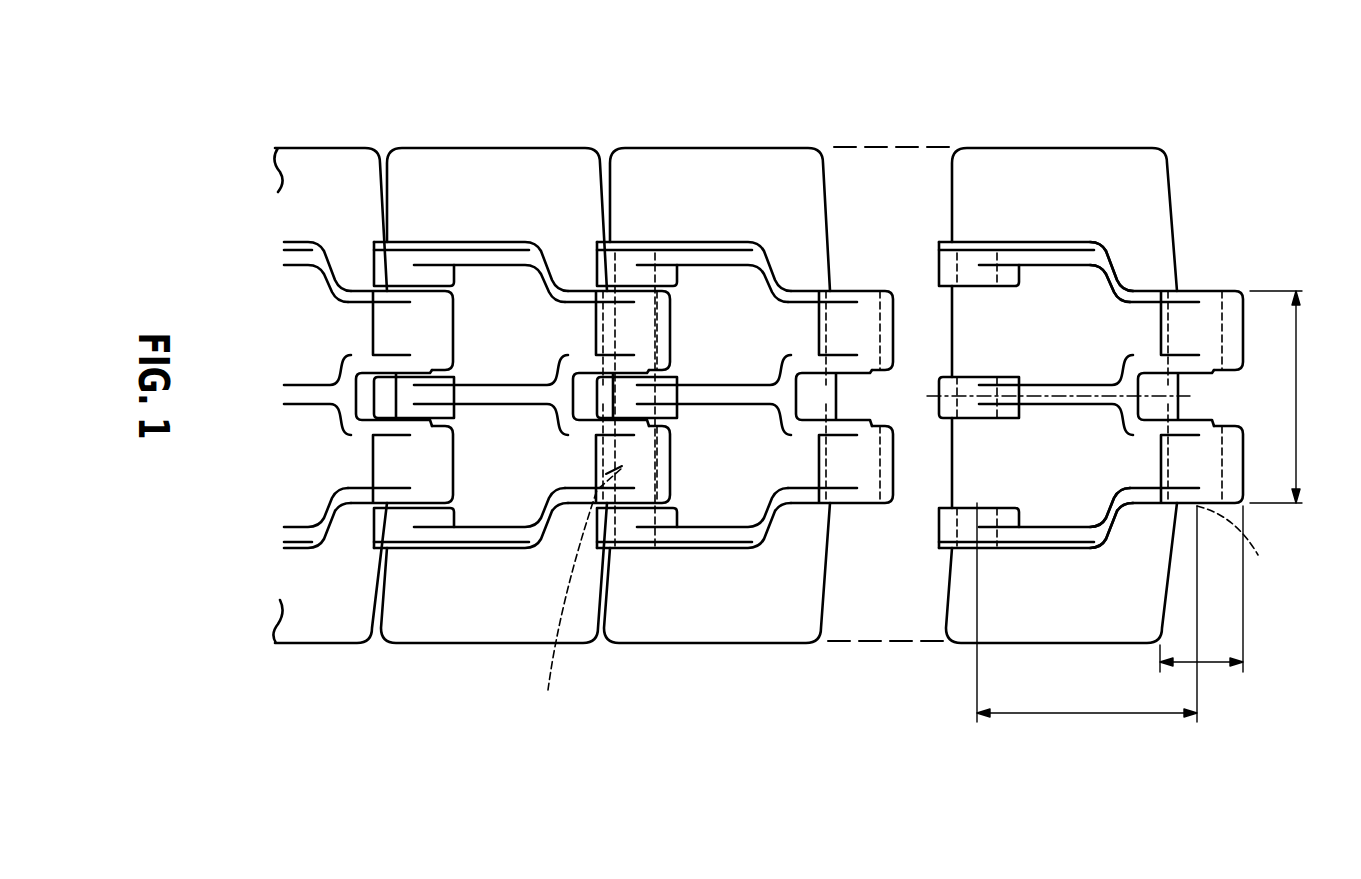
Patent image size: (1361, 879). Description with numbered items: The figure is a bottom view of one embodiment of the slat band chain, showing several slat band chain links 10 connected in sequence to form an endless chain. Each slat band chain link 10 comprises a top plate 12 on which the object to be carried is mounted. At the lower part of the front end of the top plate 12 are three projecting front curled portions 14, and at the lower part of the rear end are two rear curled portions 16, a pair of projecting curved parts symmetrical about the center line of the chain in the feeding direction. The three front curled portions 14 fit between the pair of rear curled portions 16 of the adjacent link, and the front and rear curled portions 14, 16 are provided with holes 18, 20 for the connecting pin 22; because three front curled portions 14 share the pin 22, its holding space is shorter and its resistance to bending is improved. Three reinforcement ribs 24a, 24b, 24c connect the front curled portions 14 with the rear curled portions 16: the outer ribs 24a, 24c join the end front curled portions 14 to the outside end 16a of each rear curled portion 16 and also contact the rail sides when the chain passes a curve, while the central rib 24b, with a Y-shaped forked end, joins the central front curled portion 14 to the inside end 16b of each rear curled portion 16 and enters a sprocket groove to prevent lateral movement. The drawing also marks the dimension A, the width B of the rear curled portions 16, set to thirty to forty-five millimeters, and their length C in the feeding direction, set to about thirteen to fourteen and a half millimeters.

The slat band chain link 10 is at (803, 132).
The top plate 12 is at (327, 157).
The front curled portions 14 is at (940, 265).
The rear curled portions 16 is at (1233, 292).
The outside end of rear curled portion 16a is at (1193, 291).
The inside end of rear curled portion 16b is at (1208, 377).
The holes for connecting pins 18 is at (628, 548).
The holes for connecting pins 20 is at (1258, 555).
The pin 22 is at (576, 594).
The reinforcement rib 24a is at (509, 250).
The central rib 24b is at (508, 405).
The reinforcement rib 24c is at (475, 532).
The dimension A is at (1087, 612).
The width of the rear curled portions B is at (1283, 397).
The length of the rear curled portions C is at (1201, 589).